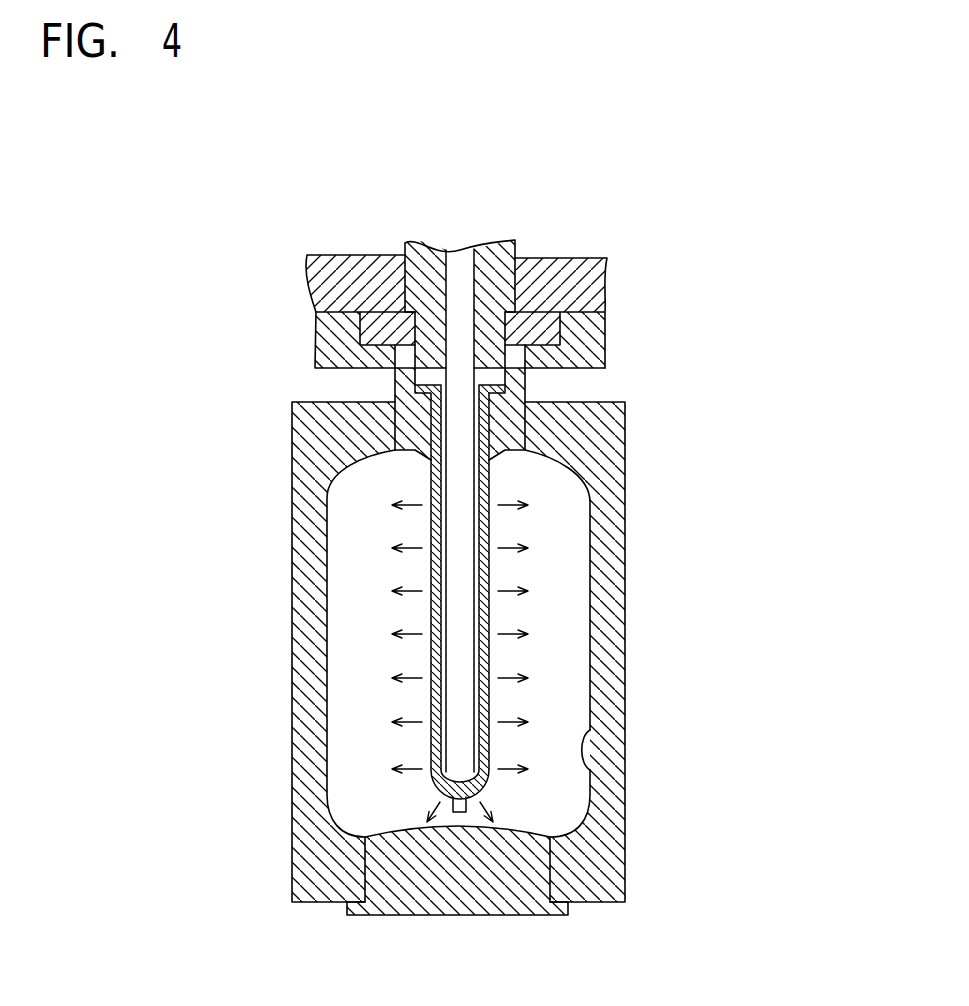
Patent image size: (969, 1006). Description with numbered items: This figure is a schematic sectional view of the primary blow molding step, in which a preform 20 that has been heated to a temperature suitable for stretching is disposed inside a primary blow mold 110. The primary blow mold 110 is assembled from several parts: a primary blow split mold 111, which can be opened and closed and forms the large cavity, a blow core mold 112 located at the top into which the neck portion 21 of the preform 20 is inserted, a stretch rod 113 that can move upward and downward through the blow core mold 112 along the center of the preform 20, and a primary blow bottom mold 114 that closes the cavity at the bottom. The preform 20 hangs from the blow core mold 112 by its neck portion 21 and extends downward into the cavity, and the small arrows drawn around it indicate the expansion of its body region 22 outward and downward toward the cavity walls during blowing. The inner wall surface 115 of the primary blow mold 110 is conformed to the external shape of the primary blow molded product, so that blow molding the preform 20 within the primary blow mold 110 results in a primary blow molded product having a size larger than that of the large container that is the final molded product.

The primary blow mold 110 is at (683, 180).
The primary blow split mold 111 is at (610, 672).
The blow core mold 112 is at (515, 240).
The stretch rod 113 is at (458, 616).
The primary blow bottom mold 114 is at (420, 902).
The inner wall surface 115 is at (591, 768).
The preform 20 is at (592, 598).
The neck portion 21 is at (490, 431).
The tube lower portion 22 is at (483, 580).